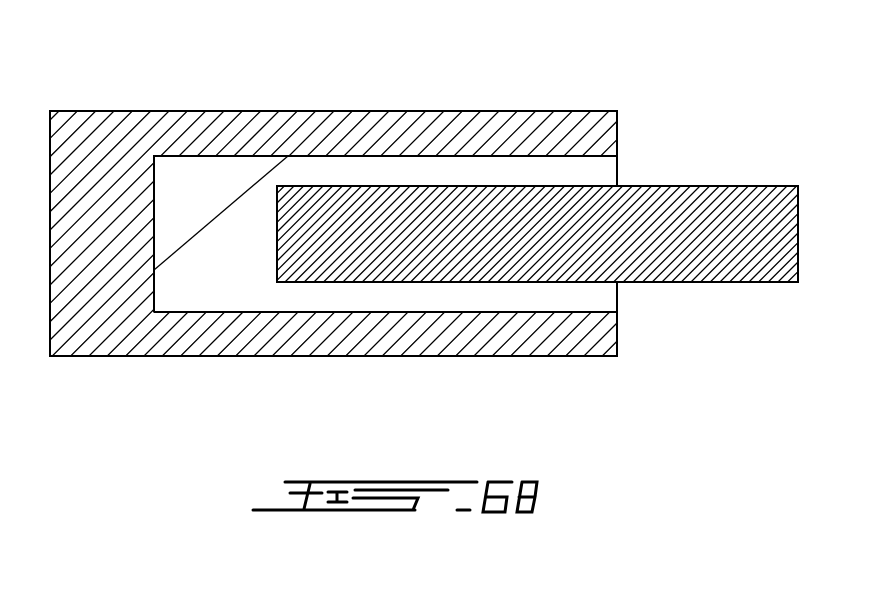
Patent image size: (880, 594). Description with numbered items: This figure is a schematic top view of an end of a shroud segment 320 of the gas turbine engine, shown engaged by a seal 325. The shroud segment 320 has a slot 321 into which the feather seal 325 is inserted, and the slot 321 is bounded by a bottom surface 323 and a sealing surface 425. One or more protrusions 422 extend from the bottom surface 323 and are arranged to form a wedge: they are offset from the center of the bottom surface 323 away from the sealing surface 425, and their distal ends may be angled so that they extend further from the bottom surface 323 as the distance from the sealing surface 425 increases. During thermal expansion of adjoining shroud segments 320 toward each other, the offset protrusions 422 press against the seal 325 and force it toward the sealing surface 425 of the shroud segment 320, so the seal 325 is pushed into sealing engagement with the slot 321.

The shroud segment 320 is at (102, 143).
The slot 321 is at (233, 270).
The bottom surface 323 is at (155, 287).
The seal 325 is at (537, 247).
The protrusions 422 is at (207, 187).
The sealing surface 425 is at (333, 310).